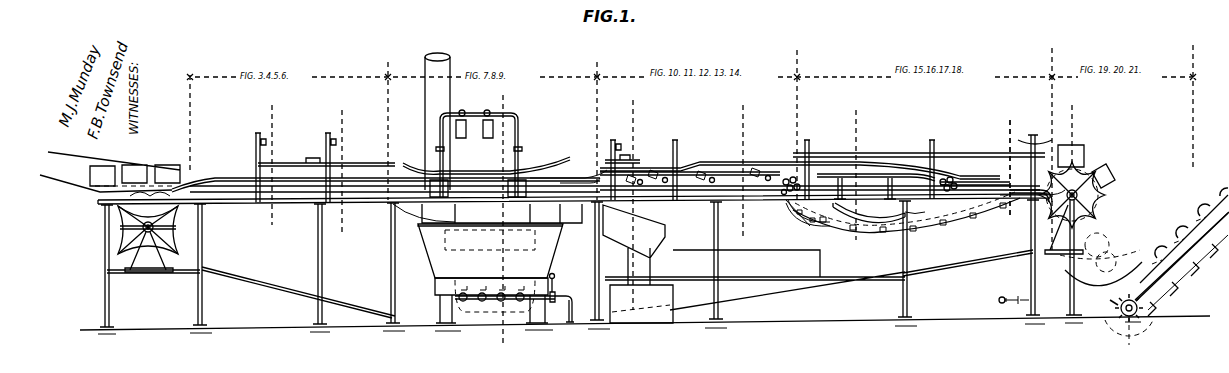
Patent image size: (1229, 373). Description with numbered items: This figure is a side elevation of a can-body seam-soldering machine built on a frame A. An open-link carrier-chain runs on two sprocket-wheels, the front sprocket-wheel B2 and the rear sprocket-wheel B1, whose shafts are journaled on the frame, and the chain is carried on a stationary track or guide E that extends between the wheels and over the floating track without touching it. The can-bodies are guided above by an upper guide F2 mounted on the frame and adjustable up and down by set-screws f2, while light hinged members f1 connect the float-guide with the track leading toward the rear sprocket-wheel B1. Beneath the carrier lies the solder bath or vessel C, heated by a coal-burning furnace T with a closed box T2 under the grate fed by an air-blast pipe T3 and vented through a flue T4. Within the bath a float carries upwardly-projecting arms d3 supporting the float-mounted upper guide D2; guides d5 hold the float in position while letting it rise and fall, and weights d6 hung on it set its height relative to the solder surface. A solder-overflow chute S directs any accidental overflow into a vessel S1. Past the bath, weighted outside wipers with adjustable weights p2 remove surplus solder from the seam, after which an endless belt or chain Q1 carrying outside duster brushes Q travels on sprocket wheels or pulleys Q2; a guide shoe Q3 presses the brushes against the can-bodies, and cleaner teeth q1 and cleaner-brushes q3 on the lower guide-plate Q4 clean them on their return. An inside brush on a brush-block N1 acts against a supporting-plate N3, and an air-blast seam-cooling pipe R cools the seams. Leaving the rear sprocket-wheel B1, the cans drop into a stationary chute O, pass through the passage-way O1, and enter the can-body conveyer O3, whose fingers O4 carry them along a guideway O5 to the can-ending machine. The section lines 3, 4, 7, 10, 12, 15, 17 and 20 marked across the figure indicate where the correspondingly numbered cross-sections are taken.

The frame A is at (230, 208).
The sprocket-wheel B2 is at (148, 245).
The rear sprocket-wheel B1 is at (1100, 192).
The solder bath or vessel C is at (411, 218).
The track or guide for the can-body carrier E is at (214, 176).
The upper guide for the can-bodies F2 is at (298, 163).
The set-screws f2 is at (260, 136).
The upper hinged members f1 is at (572, 180).
The furnace T is at (500, 263).
The closed box T2 is at (480, 305).
The air-blast or air-feed pipe T3 is at (561, 296).
The flue or exhaust-pipe T4 is at (449, 72).
The upwardly-projecting arms d3 is at (522, 150).
The guides d5 is at (550, 158).
The weights d6 is at (486, 139).
The upper guide for the can-bodies D2 is at (486, 156).
The weight p2 is at (700, 170).
The outside wiper or duster brushes Q is at (948, 204).
The endless flexible traveling belt or chain Q1 is at (925, 210).
The sprocket wheels or pulleys Q2 is at (789, 180).
The guide shoe or plate Q3 is at (880, 172).
The lower guide-plate Q4 is at (878, 228).
The brush-cleaner teeth q1 is at (800, 207).
The cleaner-brushes q3 is at (822, 226).
The seam-cooling device R is at (990, 186).
The brush-block N1 is at (1030, 185).
The supporting-plate N3 is at (1025, 200).
The solder-overflow chute or spout S is at (634, 245).
The overflow vessel S1 is at (641, 304).
The stationary guideway or chute O is at (1112, 214).
The chute or passage-way O1 is at (1095, 268).
The can-body conveyer O3 is at (1188, 275).
The fingers O4 is at (1113, 307).
The guideway O5 is at (1165, 255).
The section line 3 3 is at (250, 113).
The section line 4 4 is at (354, 118).
The section line 7 7 is at (516, 103).
The section line 10 10 is at (647, 118).
The section line 12 12 is at (756, 123).
The section line 15 15 is at (867, 126).
The section line 17 17 is at (985, 125).
The section line 20 20 is at (1084, 125).